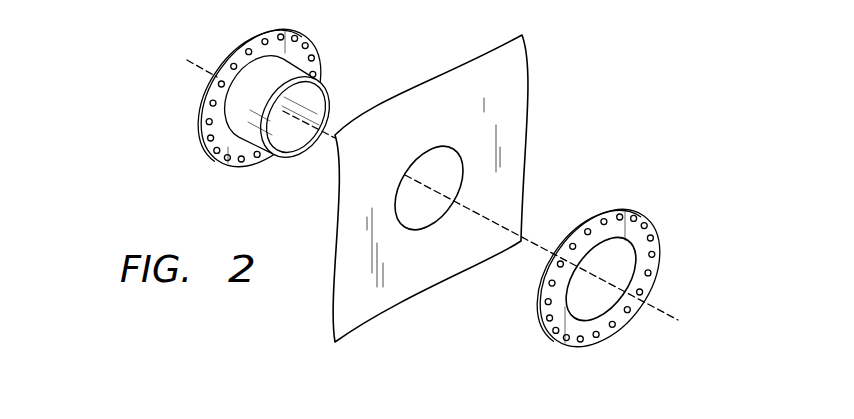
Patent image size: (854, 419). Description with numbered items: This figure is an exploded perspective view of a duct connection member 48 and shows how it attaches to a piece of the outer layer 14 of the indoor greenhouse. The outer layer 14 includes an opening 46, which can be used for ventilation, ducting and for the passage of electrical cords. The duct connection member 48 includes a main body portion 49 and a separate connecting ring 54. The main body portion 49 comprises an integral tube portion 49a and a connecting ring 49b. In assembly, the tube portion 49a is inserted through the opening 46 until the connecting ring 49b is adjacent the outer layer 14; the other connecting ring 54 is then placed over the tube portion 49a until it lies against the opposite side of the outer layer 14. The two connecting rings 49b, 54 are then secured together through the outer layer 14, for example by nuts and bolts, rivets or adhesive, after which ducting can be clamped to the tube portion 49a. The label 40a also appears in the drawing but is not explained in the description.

The duct connection member 48 is at (148, 116).
The main body portion 49 is at (257, 47).
The tube portion 49a is at (250, 102).
The connecting ring 49b is at (318, 46).
The outer layer 14 is at (517, 87).
The opening 46 is at (455, 180).
The connecting ring 54 is at (653, 226).
The shaft 40a is at (670, 0).